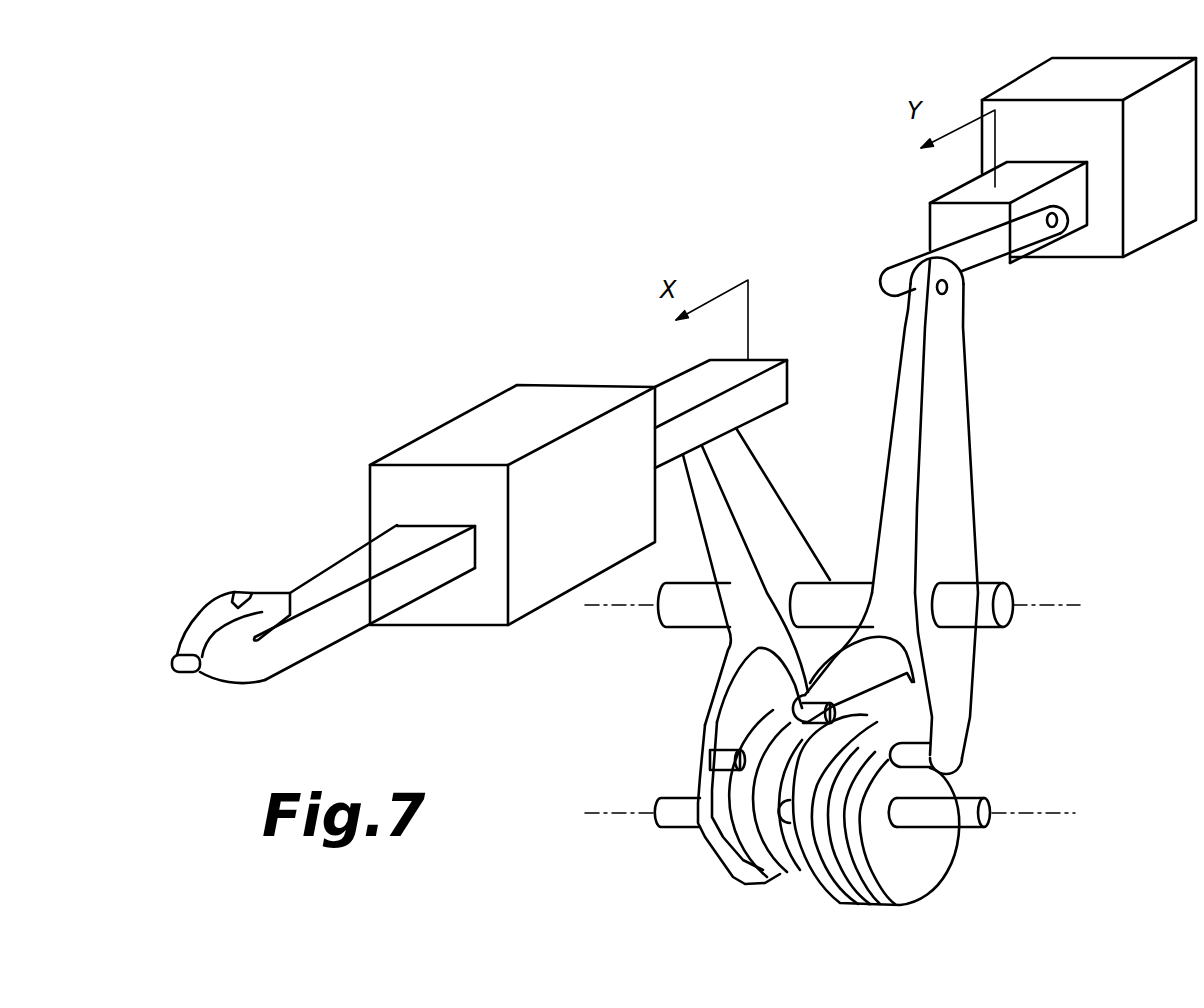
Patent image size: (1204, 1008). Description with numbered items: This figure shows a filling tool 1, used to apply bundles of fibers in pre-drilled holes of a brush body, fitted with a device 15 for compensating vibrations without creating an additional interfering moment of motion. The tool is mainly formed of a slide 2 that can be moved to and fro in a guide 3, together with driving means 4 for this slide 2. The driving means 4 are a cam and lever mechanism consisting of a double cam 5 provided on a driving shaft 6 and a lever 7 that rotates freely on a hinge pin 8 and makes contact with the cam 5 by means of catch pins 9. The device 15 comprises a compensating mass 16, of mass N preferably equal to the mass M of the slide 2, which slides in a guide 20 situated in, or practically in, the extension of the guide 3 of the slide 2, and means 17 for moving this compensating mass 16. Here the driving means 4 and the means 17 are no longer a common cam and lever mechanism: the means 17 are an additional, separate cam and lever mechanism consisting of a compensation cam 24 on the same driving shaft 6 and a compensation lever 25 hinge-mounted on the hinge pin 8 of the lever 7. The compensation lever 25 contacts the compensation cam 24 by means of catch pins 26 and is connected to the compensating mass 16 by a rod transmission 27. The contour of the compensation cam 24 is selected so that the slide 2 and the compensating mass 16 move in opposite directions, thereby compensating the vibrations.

The tool 1 is at (417, 107).
The slide 2 is at (323, 638).
The guide 3 is at (528, 603).
The driving means 4 is at (798, 423).
The cam 5 is at (722, 845).
The driving shaft 6 is at (1000, 820).
The lever 7 is at (762, 497).
The hinge pin 8 is at (1010, 608).
The catch pins 9 is at (716, 760).
The device for compensating the vibrations 15 is at (852, 160).
The compensating mass 16 is at (967, 188).
The means for moving the compensating mass 17 is at (1040, 538).
The guide 20 is at (1158, 226).
The compensation cam 24 is at (930, 866).
The compensation lever 25 is at (958, 455).
The catch pins 26 is at (822, 708).
The rod transmission 27 is at (975, 258).